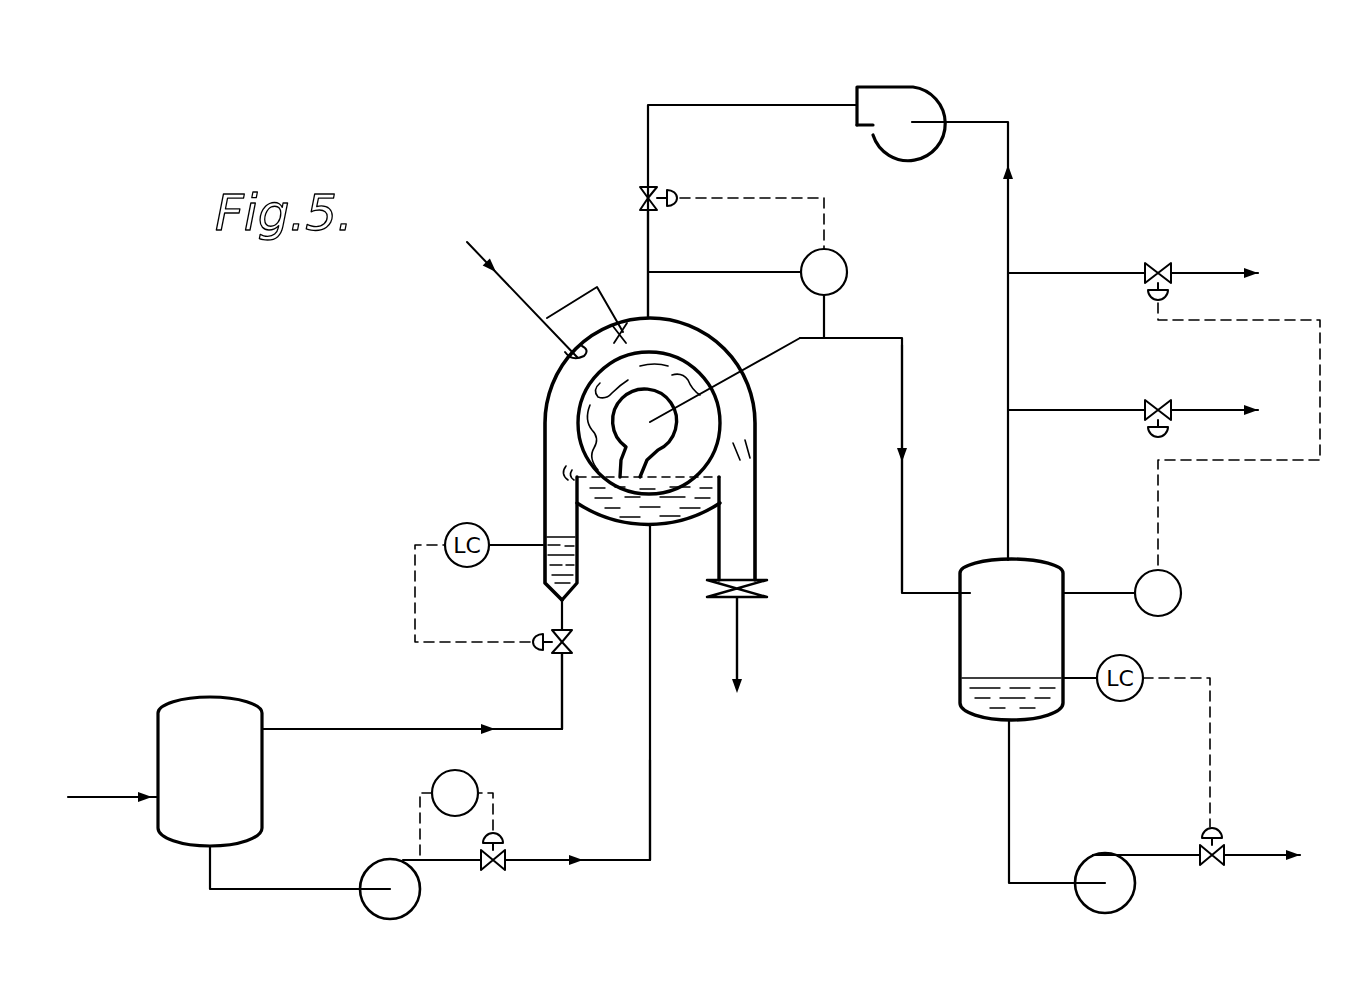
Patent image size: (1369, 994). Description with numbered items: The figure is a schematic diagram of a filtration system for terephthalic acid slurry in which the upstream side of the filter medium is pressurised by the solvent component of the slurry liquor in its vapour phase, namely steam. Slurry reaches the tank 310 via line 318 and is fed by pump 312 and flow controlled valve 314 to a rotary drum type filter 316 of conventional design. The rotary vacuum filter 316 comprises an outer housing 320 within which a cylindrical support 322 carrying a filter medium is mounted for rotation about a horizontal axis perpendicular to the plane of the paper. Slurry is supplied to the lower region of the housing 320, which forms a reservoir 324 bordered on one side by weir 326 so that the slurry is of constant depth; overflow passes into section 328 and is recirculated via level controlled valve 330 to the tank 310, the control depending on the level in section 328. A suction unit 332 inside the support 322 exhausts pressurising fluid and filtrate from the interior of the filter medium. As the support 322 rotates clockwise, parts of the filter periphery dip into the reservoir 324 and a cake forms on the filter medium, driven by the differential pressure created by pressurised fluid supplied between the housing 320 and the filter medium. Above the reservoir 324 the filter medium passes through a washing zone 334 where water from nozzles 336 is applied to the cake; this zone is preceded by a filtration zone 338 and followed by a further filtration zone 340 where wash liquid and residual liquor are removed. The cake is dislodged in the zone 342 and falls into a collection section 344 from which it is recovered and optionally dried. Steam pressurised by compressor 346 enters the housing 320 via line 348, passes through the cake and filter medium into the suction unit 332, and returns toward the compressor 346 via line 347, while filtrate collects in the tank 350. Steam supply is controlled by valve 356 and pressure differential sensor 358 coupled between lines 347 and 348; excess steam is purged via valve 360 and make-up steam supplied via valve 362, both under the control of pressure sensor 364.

The tank 310 is at (262, 755).
The pump 312 is at (417, 895).
The flow controlled valve 314 is at (500, 868).
The rotary drum type filter 316 is at (480, 450).
The line 318 is at (650, 750).
The outer housing 320 is at (545, 395).
The cylindrical support 322 is at (668, 355).
The reservoir 324 is at (620, 505).
The weir 326 is at (577, 493).
The section 328 is at (555, 565).
The level controlled valve 330 is at (605, 630).
The suction unit 332 is at (655, 438).
The washing zone 334 is at (582, 388).
The nozzles 336 is at (632, 312).
The filtration zone 338 is at (598, 413).
The further filtration zone 340 is at (725, 363).
The zone 342 is at (757, 420).
The collection section 344 is at (738, 540).
The compressor 346 is at (923, 100).
The line 347 is at (902, 420).
The line 348 is at (648, 237).
The tank 350 is at (960, 667).
The valve 356 is at (650, 185).
The pressure differential sensor 358 is at (835, 252).
The valve 360 is at (1158, 262).
The valve 362 is at (1158, 400).
The pressure sensor 364 is at (1182, 585).